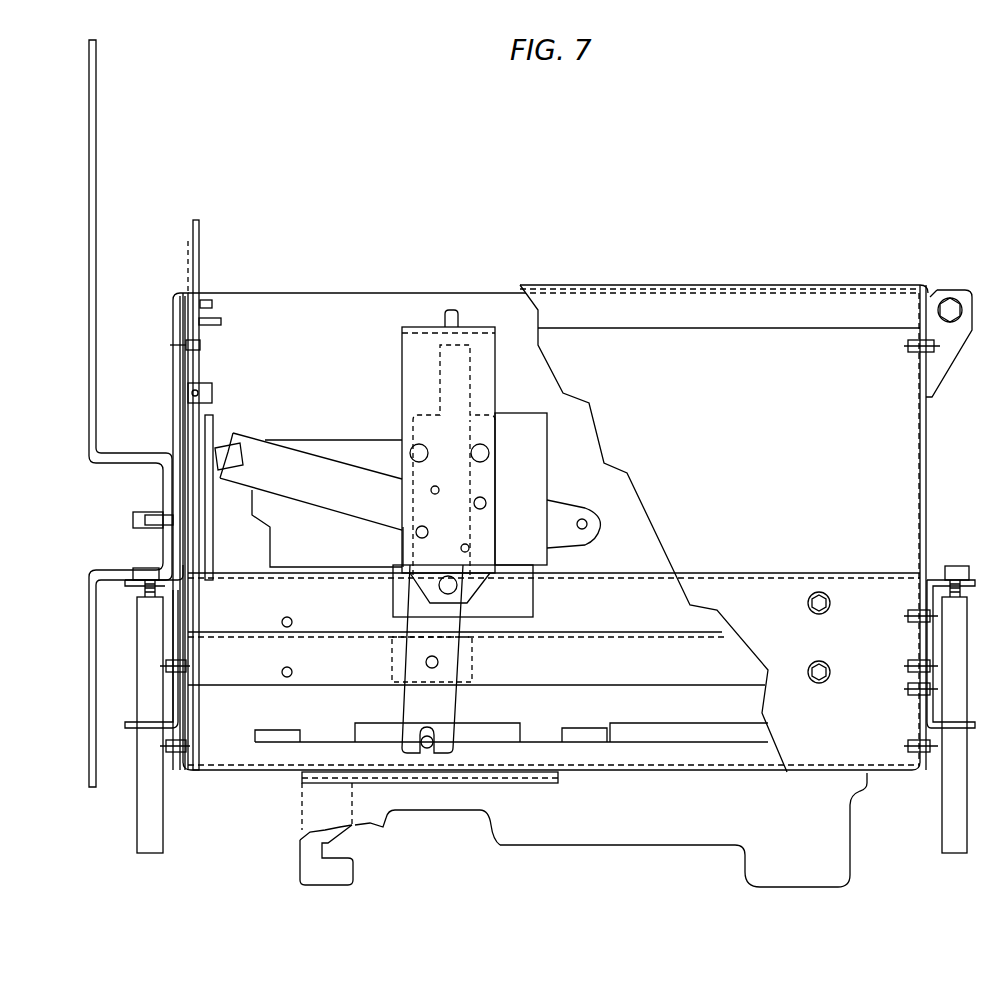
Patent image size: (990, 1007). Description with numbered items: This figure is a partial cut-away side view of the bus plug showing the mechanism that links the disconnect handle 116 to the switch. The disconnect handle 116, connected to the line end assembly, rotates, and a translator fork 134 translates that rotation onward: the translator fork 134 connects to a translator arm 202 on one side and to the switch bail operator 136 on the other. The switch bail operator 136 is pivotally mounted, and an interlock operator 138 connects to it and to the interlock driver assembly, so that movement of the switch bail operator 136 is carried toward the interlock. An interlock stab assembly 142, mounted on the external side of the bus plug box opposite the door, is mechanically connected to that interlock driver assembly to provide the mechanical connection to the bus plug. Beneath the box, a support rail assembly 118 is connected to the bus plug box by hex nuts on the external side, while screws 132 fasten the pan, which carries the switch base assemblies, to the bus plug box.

The disconnect handle 116 is at (96, 120).
The support rail assembly 118 is at (812, 893).
The screws 132 is at (823, 592).
The translator fork 134 is at (298, 452).
The switch bail operator 136 is at (497, 347).
The interlock operator 138 is at (458, 347).
The interlock stab assembly 142 is at (302, 885).
The translator arm 202 is at (213, 432).